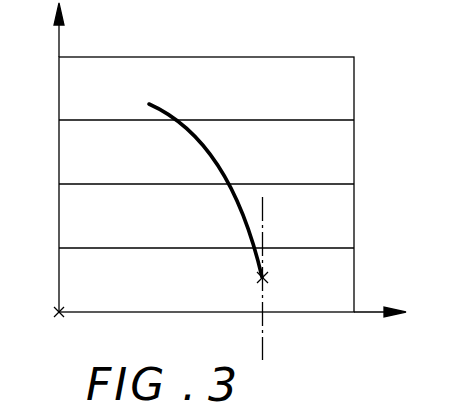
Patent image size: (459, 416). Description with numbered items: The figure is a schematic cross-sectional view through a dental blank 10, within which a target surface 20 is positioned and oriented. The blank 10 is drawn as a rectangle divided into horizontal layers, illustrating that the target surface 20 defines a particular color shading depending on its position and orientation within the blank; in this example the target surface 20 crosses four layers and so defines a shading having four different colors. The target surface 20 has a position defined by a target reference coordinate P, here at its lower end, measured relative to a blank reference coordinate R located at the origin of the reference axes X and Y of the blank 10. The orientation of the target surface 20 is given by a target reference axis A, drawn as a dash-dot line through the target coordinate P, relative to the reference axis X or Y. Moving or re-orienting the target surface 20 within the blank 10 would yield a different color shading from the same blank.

The blank 10 is at (228, 37).
The target surface 20 is at (230, 153).
The target reference coordinate P is at (268, 278).
The target reference axis A is at (264, 347).
The blank reference coordinate R is at (50, 322).
The reference axis X is at (49, 30).
The reference axis Y is at (380, 324).